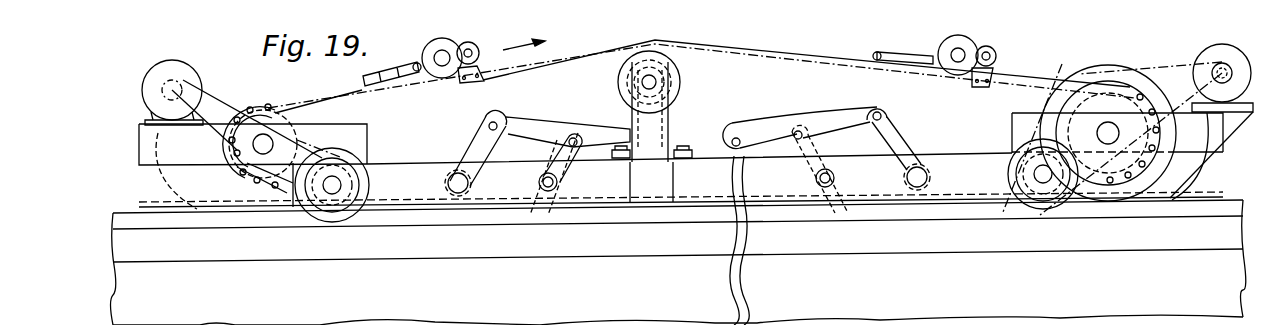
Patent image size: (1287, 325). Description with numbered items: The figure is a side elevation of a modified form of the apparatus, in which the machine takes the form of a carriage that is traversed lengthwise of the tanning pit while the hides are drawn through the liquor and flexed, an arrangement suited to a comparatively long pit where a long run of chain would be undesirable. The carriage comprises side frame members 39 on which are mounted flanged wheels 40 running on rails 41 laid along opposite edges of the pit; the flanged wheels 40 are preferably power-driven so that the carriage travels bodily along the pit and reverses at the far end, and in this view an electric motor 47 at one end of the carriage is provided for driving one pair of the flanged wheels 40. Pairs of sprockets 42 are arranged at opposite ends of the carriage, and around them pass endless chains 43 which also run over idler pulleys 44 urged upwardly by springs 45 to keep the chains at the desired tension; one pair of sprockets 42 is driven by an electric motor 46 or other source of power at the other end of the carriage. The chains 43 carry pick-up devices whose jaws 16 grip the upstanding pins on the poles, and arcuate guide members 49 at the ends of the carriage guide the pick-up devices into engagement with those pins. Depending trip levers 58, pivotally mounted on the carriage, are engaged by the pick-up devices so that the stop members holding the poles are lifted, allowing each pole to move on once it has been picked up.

The jaws of the pick-up devices 16 is at (412, 74).
The side frame members 39 is at (425, 193).
The flanged wheels 40 is at (367, 180).
The rails 41 is at (1227, 202).
The sprockets 42 is at (1089, 128).
The endless chains 43 is at (812, 68).
The idler pulleys 44 is at (680, 86).
The springs 45 is at (668, 128).
The electric motor 46 is at (1197, 53).
The electric motor 47 is at (197, 82).
The guide members 49 is at (175, 183).
The trip levers 58 is at (528, 211).